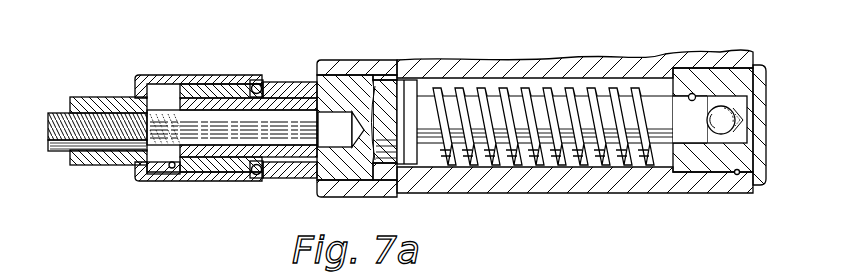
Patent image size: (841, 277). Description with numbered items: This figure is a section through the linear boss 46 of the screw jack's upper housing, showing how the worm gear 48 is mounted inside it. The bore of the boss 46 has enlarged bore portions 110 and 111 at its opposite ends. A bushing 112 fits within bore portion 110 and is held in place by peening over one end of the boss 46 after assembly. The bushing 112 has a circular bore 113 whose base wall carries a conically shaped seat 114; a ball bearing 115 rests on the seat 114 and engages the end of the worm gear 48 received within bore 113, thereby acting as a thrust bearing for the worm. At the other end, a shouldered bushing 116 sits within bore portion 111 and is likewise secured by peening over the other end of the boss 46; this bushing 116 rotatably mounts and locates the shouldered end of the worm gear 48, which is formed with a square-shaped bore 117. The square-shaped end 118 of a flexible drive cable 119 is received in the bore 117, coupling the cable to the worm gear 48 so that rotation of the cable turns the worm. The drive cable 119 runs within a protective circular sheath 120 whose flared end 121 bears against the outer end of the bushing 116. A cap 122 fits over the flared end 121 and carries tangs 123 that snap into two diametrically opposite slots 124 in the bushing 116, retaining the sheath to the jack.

The linear boss 46 is at (548, 66).
The worm gear 48 is at (562, 153).
The bore portion 110 is at (737, 175).
The bore portion 111 is at (365, 73).
The bushing 112 is at (727, 82).
The circular bore 113 is at (692, 93).
The conically shaped seat 114 is at (733, 114).
The ball bearing 115 is at (736, 128).
The shouldered bushing 116 is at (230, 168).
The square-shaped bore 117 is at (217, 142).
The square-shaped end 118 is at (165, 113).
The flexible drive cable 119 is at (58, 112).
The protective circular sheath 120 is at (107, 97).
The flared end 121 is at (169, 173).
The cap 122 is at (216, 75).
The tangs 123 is at (257, 81).
The slots 124 is at (264, 88).